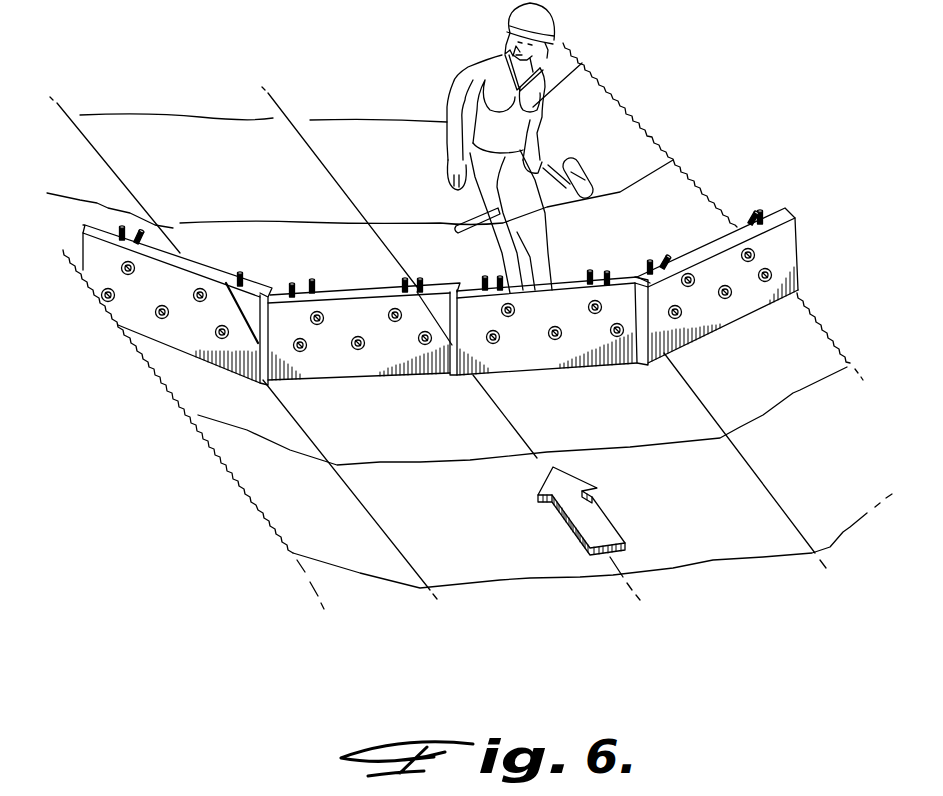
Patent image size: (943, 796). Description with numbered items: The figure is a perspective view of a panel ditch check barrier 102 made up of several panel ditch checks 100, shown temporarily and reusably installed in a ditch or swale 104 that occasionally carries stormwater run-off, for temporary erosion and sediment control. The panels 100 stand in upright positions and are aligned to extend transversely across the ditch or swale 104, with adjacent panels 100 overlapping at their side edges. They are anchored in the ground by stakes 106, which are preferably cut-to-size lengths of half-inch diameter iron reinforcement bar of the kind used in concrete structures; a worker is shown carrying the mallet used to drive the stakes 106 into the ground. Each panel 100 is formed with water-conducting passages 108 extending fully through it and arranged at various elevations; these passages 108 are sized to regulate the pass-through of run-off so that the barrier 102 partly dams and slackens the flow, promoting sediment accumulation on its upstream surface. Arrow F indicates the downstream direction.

The panel ditch check 100 is at (177, 337).
The panel ditch check barrier 102 is at (362, 293).
The ditch or swale 104 is at (720, 515).
The stakes 106 is at (223, 268).
The water-conducting passages 108 is at (365, 344).
The arrow indicating downstream direction F is at (580, 517).